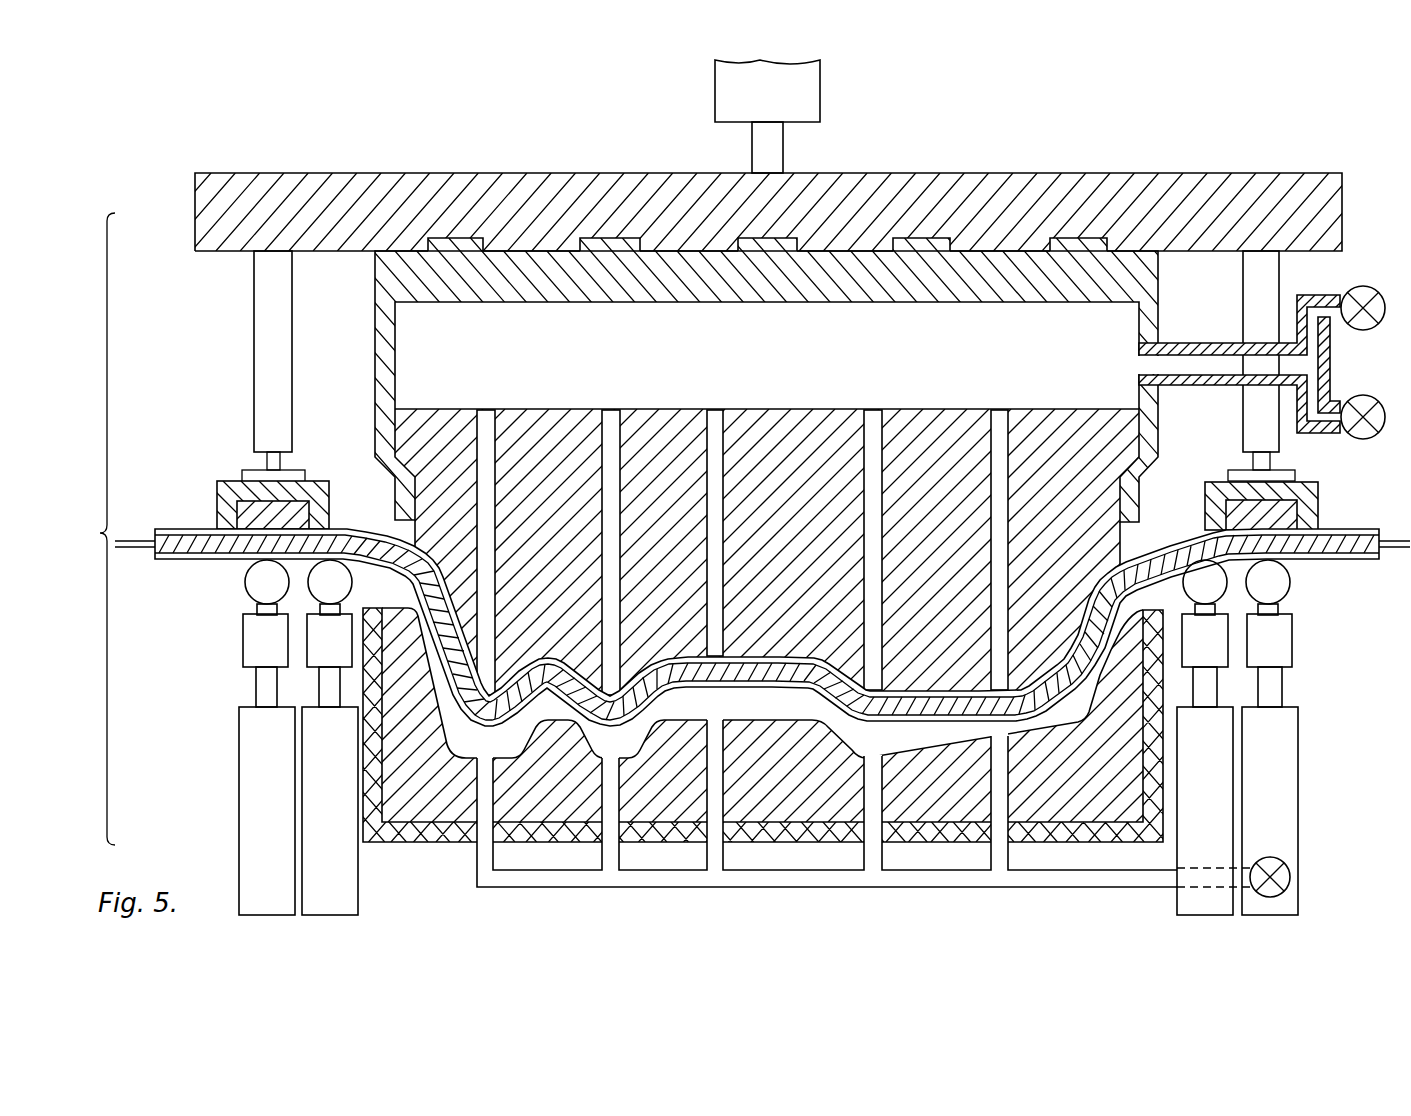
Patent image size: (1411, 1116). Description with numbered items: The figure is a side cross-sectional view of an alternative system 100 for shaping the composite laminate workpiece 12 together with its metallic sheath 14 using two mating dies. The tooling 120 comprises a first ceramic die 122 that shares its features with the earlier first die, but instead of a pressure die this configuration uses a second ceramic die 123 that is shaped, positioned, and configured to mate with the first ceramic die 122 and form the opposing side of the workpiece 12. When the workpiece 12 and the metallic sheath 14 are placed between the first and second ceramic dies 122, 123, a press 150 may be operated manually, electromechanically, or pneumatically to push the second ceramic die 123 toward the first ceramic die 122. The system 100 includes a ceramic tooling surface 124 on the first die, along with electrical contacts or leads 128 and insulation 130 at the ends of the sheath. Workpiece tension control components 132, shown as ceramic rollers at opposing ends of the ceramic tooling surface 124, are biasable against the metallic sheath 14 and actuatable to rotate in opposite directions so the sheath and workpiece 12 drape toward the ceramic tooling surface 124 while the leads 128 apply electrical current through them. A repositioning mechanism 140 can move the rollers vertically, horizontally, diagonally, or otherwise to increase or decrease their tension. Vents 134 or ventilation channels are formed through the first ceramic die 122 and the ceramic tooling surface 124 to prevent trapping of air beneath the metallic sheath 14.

The system 100 is at (1266, 136).
The press 150 is at (527, 190).
The tooling 120 is at (667, 529).
The second ceramic die 123 is at (560, 425).
The vents 134 is at (876, 440).
The insulation 130 is at (228, 490).
The electrical contacts or leads 128 is at (262, 510).
The workpiece tension control components 132 is at (255, 585).
The repositioning mechanism 140 is at (253, 728).
The first ceramic die 122 is at (760, 756).
The ceramic tooling surface 124 is at (800, 720).
The metallic sheath 14 is at (925, 718).
The workpiece 12 is at (950, 705).